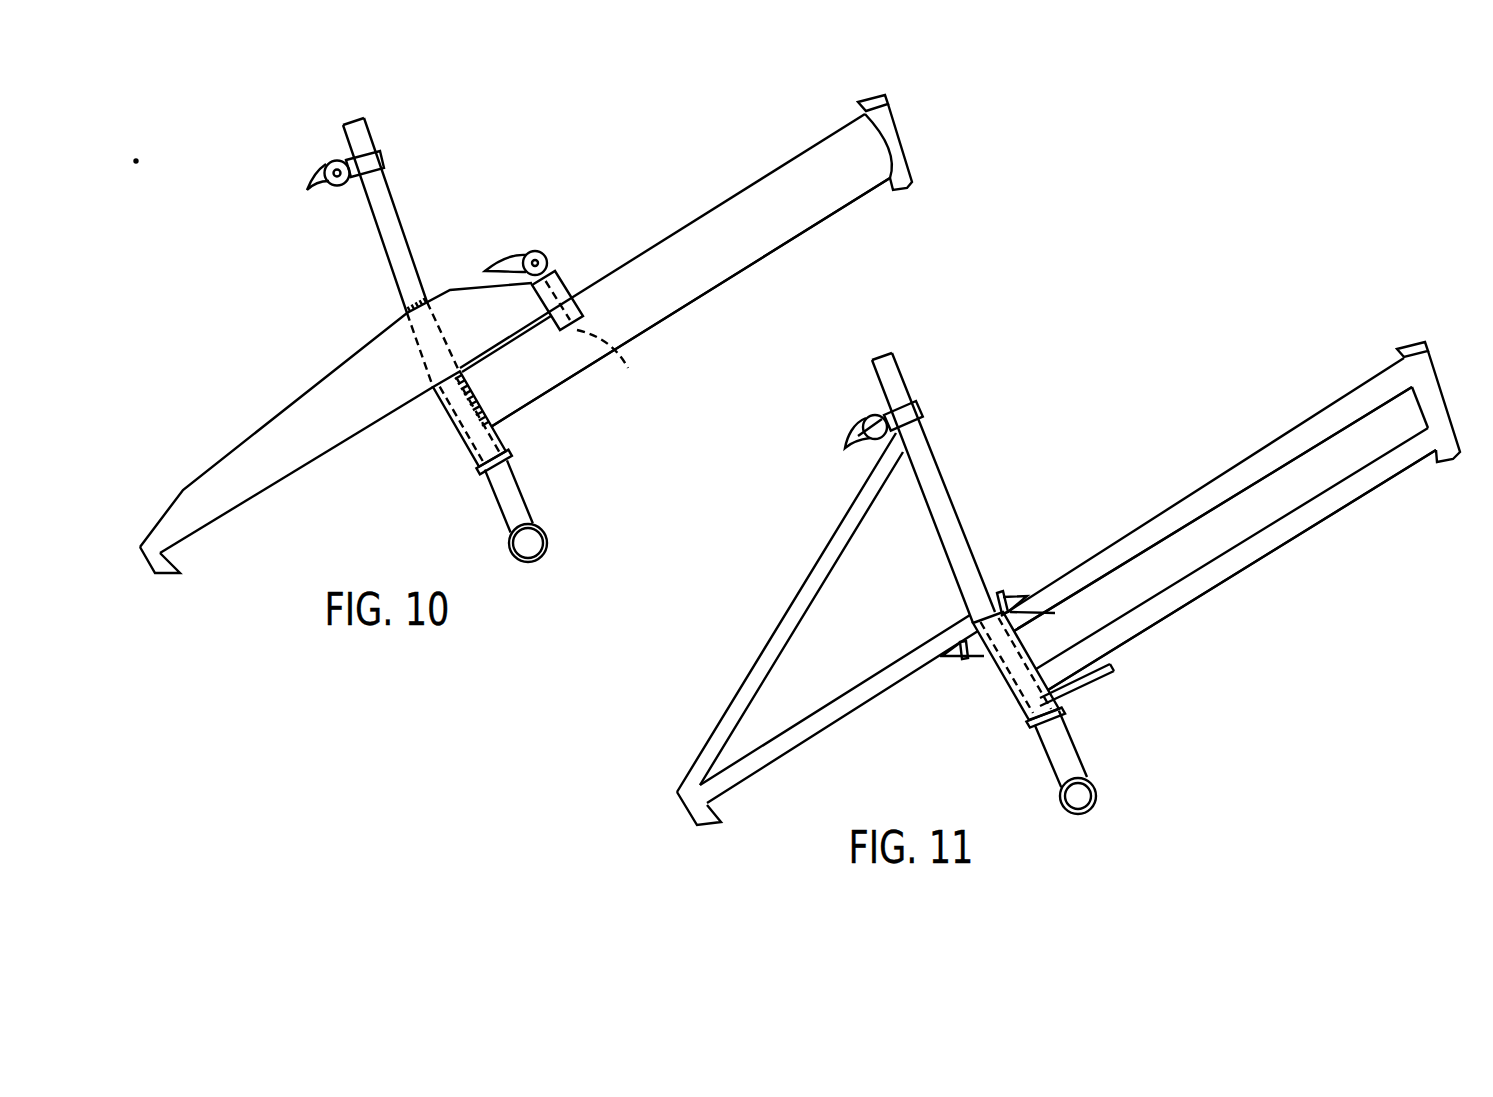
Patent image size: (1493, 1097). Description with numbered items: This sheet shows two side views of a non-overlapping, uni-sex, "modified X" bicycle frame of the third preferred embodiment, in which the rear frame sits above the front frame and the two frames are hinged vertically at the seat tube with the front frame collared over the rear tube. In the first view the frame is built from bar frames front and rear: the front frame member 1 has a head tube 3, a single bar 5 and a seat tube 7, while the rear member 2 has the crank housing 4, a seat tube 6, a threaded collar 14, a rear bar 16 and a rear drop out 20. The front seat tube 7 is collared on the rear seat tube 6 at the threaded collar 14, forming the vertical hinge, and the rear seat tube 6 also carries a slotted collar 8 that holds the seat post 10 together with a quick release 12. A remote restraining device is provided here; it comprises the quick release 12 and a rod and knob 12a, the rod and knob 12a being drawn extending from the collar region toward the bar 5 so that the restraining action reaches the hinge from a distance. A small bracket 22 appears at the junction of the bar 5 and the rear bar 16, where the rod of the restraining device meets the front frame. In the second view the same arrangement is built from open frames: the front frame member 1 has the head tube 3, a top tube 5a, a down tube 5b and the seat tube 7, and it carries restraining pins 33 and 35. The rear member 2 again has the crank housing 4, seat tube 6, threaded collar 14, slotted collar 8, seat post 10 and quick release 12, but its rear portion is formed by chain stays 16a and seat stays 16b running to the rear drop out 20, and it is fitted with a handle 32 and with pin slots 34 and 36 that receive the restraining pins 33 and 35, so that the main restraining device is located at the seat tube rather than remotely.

In FIG. 10, the front frame member 1 is at (651, 222).
In FIG. 11, the front frame member 1 is at (1181, 475).
In FIG. 10, the rear member 2 is at (259, 391).
In FIG. 11, the rear member 2 is at (852, 630).
In FIG. 10, the head tube 3 is at (898, 121).
In FIG. 11, the head tube 3 is at (1432, 400).
In FIG. 10, the crank housing 4 is at (552, 543).
In FIG. 11, the crank housing 4 is at (1098, 796).
In FIG. 10, the bar 5 is at (624, 297).
In FIG. 11, the top tube 5a is at (1082, 572).
In FIG. 11, the down tube 5b is at (1208, 597).
In FIG. 10, the seat tube 6 is at (392, 196).
In FIG. 11, the seat tube 6 is at (946, 489).
In FIG. 10, the seat tube 7 is at (446, 436).
In FIG. 11, the seat tube 7 is at (990, 684).
In FIG. 10, the slotted collar 8 is at (390, 153).
In FIG. 11, the slotted collar 8 is at (926, 404).
In FIG. 10, the seat post 10 is at (364, 124).
In FIG. 11, the seat post 10 is at (893, 369).
In FIG. 10, the quick release 12 is at (319, 167).
In FIG. 11, the quick release 12 is at (864, 405).
In FIG. 10, the rod and knob 12a is at (611, 363).
In FIG. 10, the threaded collar 14 is at (512, 440).
In FIG. 11, the threaded collar 14 is at (1046, 736).
In FIG. 10, the rear bar 16 is at (290, 435).
In FIG. 11, the chain stays 16a is at (803, 741).
In FIG. 11, the seat stays 16b is at (793, 590).
In FIG. 10, the rear drop out 20 is at (174, 553).
In FIG. 11, the rear drop out 20 is at (713, 806).
In FIG. 10, the bracket 22 is at (530, 315).
In FIG. 11, the handle 32 is at (1120, 671).
In FIG. 11, the restraining pin 33 is at (957, 665).
In FIG. 11, the pin slot 34 is at (972, 630).
In FIG. 11, the restraining pin 35 is at (1001, 588).
In FIG. 11, the pin slot 36 is at (1055, 613).